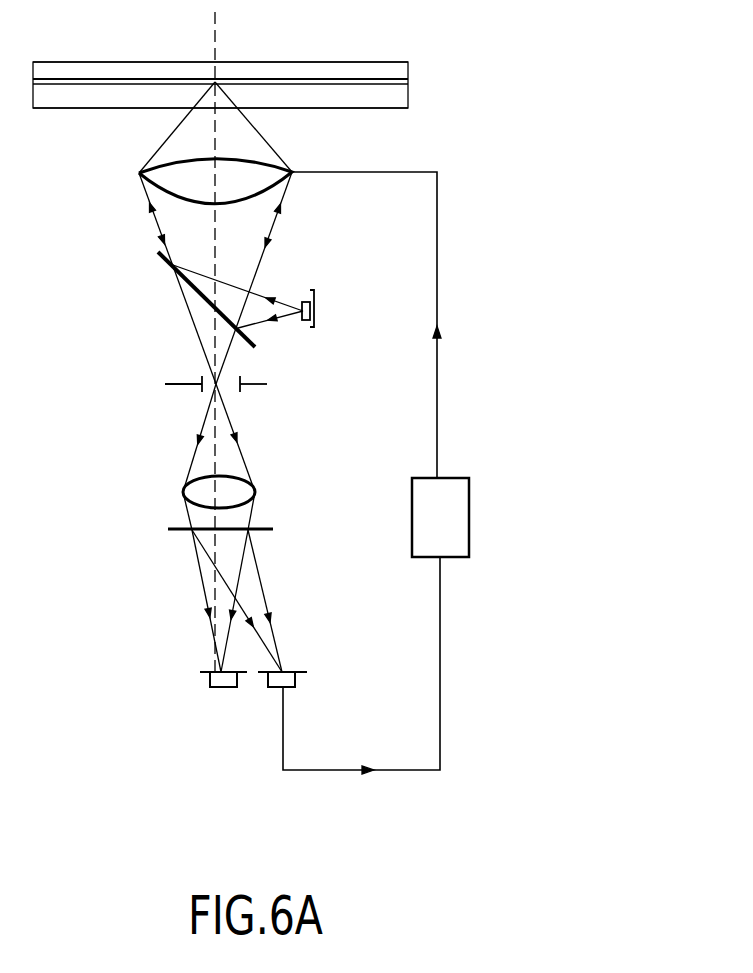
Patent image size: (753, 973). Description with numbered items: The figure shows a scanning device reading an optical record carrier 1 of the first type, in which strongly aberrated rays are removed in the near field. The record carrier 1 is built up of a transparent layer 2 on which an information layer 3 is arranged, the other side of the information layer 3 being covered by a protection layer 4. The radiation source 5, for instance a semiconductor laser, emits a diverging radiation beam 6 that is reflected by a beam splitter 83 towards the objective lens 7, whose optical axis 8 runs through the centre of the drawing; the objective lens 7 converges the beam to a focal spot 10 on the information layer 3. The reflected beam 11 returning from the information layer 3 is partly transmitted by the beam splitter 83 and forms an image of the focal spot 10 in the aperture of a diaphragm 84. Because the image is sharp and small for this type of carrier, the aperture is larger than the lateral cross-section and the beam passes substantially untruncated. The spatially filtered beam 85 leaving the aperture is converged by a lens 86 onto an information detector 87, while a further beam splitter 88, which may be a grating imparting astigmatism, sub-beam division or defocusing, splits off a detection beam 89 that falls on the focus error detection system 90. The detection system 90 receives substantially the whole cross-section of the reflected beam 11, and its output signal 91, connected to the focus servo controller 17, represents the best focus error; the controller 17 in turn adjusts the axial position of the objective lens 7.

The optical record carrier 1 is at (238, 64).
The transparent layer 2 is at (398, 97).
The information layer 3 is at (403, 82).
The protection layer 4 is at (403, 63).
The radiation source 5 is at (316, 291).
The radiation beam 6 is at (272, 298).
The objective lens 7 is at (160, 178).
The optical axis 8 is at (211, 27).
The focal spot 10 is at (216, 78).
The reflected beam 11 is at (157, 228).
The focus servo controller 17 is at (470, 517).
The beam splitter 83 is at (162, 258).
The diaphragm 84 is at (173, 381).
The spatially filtered beam 85 is at (199, 432).
The lens 86 is at (246, 490).
The beam splitter 88 is at (265, 529).
The detection beam 89 is at (262, 582).
The information detector 87 is at (217, 688).
The detection system 90 is at (290, 688).
The output signal 91 is at (332, 772).